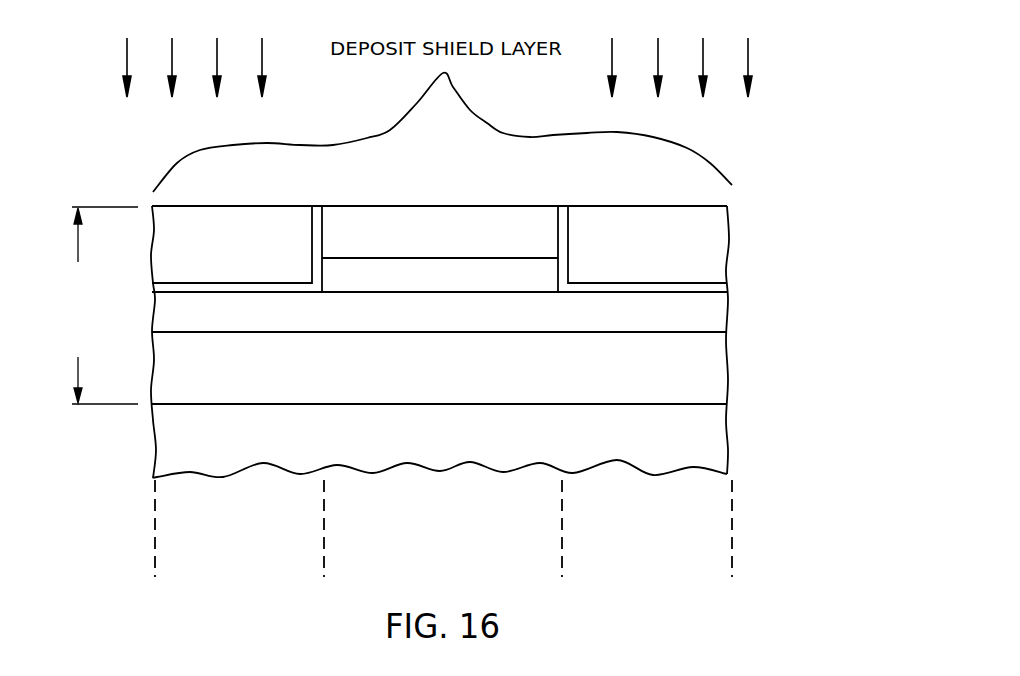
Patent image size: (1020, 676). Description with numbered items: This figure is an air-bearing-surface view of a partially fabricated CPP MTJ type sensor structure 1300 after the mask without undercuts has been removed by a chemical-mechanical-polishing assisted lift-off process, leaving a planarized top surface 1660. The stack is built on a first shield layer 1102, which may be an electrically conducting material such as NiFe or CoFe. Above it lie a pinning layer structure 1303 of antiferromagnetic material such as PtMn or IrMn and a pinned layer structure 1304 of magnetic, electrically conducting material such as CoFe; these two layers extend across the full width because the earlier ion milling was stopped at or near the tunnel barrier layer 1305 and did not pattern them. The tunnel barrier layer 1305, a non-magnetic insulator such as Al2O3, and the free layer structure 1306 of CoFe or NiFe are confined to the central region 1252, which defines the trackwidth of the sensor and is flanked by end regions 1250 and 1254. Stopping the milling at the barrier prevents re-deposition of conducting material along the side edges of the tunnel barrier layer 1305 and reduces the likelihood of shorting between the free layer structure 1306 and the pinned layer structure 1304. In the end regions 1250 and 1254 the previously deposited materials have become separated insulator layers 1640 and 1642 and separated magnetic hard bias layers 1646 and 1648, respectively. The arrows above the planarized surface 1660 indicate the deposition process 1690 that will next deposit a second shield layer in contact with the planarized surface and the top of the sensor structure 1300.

The deposition process 1690 is at (754, 60).
The planarized top surface 1660 is at (448, 72).
The insulator layer 1640 is at (281, 292).
The insulator layer 1642 is at (624, 290).
The magnetic hard bias layer 1646 is at (223, 258).
The magnetic hard bias layer 1648 is at (719, 263).
The free layer structure 1306 is at (497, 240).
The tunnel barrier layer 1305 is at (514, 285).
The pinned layer structure 1304 is at (507, 318).
The pinning layer structure 1303 is at (512, 378).
The first shield layer 1102 is at (570, 448).
The CPP MTJ type sensor structure 1300 is at (79, 305).
The end region 1250 is at (239, 528).
The central region 1252 is at (459, 528).
The end region 1254 is at (658, 528).